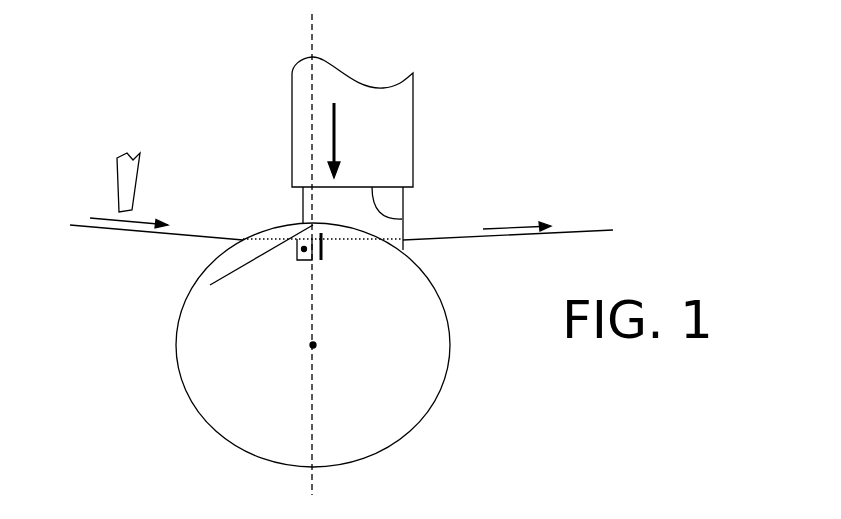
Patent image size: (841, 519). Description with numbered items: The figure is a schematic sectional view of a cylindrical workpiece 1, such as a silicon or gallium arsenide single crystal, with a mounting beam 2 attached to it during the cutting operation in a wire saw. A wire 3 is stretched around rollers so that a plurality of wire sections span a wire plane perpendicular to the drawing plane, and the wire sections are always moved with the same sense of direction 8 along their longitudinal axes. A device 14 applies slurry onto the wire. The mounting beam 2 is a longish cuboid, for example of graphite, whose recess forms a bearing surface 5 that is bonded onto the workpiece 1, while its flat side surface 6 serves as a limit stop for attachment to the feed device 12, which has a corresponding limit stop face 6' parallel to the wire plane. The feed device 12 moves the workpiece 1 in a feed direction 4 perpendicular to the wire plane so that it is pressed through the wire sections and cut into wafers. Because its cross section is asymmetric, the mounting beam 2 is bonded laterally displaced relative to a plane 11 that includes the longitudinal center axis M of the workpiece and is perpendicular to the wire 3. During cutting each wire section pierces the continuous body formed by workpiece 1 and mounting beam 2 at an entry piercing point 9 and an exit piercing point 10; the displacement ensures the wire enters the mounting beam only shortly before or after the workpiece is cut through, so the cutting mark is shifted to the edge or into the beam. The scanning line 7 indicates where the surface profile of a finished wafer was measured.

The workpiece 1 is at (336, 345).
The mounting beam 2 is at (402, 148).
The wire 3 is at (542, 197).
The feed direction 4 is at (339, 132).
The bearing surface 5 is at (210, 285).
The flat side surface 6 is at (449, 133).
The limit stop face 6' is at (432, 201).
The scanning line 7 is at (324, 240).
The sense of direction 8 is at (149, 210).
The piercing point 9 is at (245, 252).
The piercing point 10 is at (443, 260).
The plane 11 is at (312, 25).
The feed device 12 is at (413, 172).
The device for applying slurry 14 is at (118, 168).